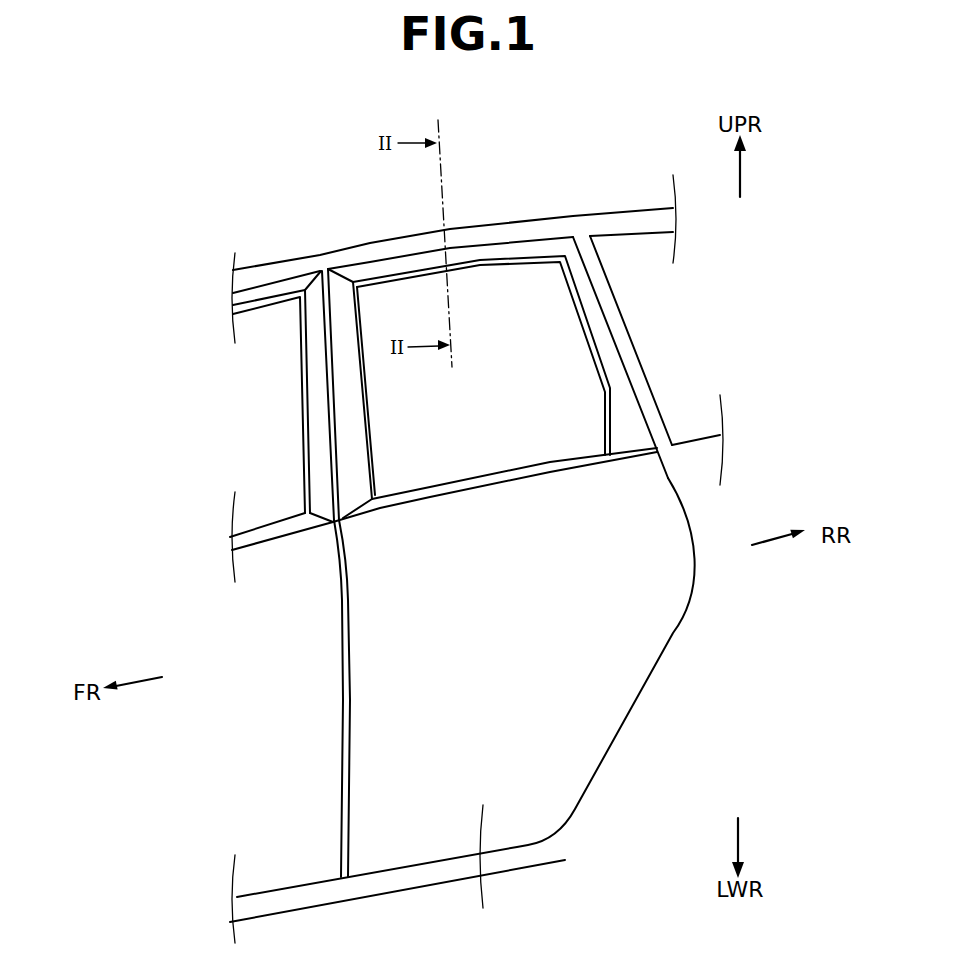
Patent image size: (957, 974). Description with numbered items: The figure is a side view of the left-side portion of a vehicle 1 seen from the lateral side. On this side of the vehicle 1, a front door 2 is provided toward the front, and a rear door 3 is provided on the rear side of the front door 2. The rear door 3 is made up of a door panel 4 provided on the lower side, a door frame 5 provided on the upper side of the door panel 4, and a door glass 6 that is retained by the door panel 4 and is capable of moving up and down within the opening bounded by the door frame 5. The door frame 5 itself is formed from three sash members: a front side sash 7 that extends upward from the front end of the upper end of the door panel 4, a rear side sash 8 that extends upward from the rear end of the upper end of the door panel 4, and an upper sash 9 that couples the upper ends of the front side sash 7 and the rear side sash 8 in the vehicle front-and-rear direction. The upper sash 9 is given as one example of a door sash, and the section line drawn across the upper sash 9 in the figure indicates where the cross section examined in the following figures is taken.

The vehicle 1 is at (182, 280).
The front door 2 is at (275, 728).
The rear door 3 is at (622, 619).
The door panel 4 is at (397, 871).
The door frame 5 is at (597, 300).
The door glass 6 is at (480, 442).
The front side sash 7 is at (350, 393).
The rear side sash 8 is at (610, 358).
The upper sash 9 is at (377, 270).